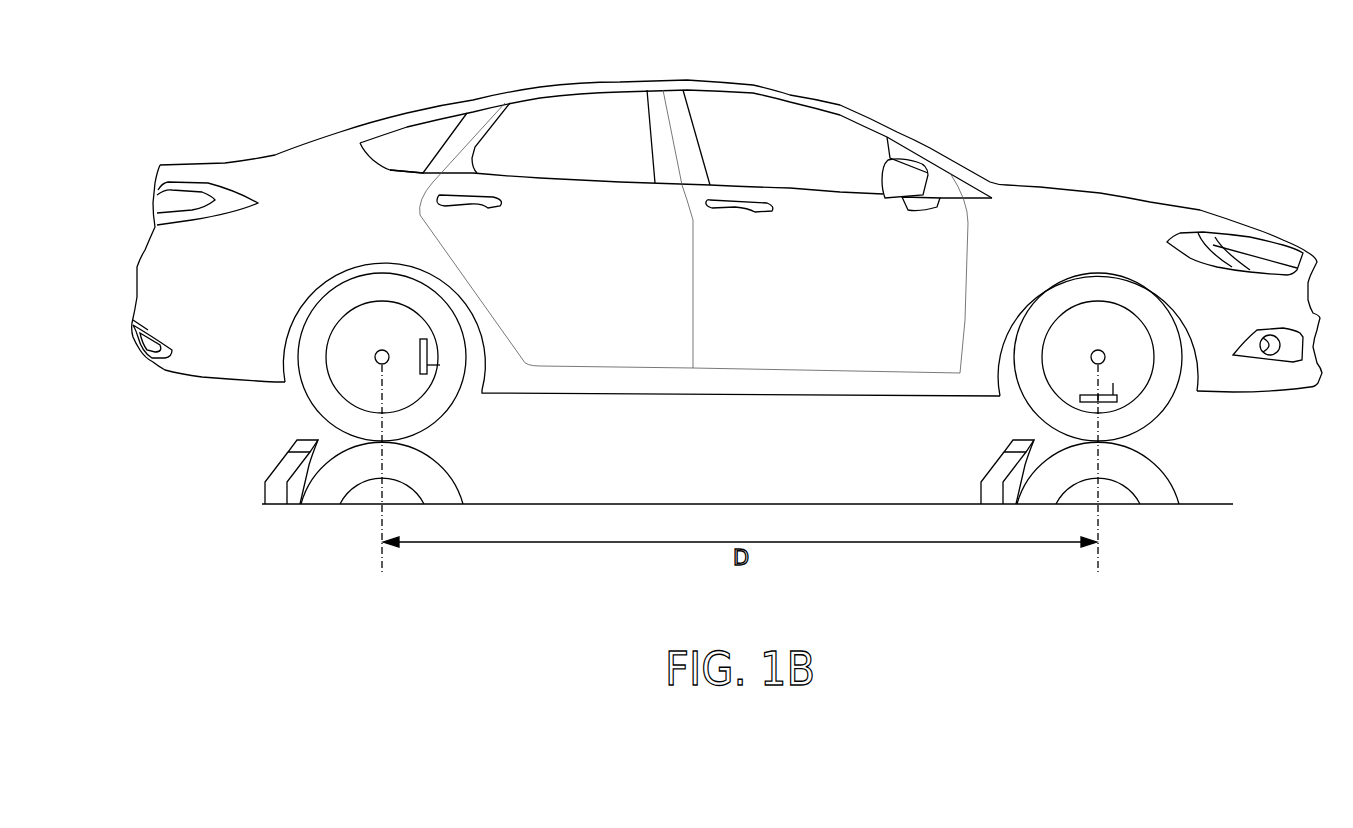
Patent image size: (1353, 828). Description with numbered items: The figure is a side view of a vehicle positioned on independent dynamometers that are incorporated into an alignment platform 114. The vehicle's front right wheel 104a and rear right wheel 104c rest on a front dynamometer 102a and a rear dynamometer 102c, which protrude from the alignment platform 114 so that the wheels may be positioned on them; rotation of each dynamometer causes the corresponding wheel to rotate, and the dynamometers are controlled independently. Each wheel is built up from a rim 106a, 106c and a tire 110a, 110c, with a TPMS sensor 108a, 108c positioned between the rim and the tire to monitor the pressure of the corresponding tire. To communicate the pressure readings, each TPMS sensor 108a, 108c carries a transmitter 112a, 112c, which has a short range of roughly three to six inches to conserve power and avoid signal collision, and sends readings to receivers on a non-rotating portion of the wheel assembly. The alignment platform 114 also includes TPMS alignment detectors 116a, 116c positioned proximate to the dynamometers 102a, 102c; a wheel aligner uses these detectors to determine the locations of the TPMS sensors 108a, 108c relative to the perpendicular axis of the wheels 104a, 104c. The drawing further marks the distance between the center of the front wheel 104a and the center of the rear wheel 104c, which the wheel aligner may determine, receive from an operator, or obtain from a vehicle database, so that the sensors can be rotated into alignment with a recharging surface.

The dynamometer 102c is at (456, 480).
The dynamometer 102a is at (1172, 478).
The rear right wheel 104c is at (348, 266).
The front right wheel 104a is at (1126, 258).
The rim 106c is at (431, 396).
The rim 106a is at (1145, 394).
The TPMS sensor 108c is at (440, 365).
The TPMS sensor 108a is at (1113, 385).
The tire 110c is at (420, 290).
The tire 110a is at (1080, 287).
The transmitter 112c is at (428, 347).
The transmitter 112a is at (1082, 395).
The alignment platform 114 is at (295, 505).
The TPMS alignment detector 116c is at (288, 453).
The TPMS alignment detector 116a is at (1004, 454).